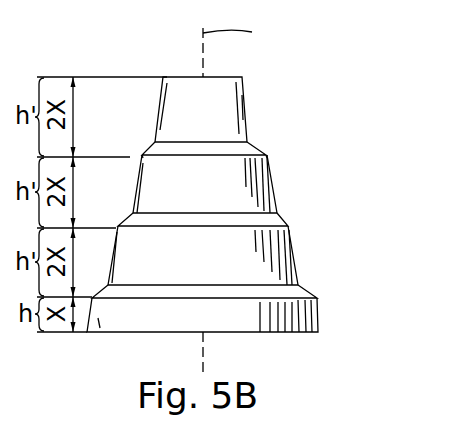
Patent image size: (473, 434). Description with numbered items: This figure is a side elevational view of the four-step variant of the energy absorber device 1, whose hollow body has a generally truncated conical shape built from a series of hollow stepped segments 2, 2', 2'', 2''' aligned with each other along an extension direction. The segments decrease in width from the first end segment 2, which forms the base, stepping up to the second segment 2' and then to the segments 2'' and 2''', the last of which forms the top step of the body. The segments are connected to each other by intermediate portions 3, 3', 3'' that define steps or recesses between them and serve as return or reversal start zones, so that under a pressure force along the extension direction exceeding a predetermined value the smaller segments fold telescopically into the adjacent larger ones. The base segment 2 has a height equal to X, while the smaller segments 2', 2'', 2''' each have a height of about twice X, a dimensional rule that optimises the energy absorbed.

The energy absorber device 1 is at (142, 62).
The first end segment 2 is at (243, 308).
The second segment 2' is at (240, 247).
The hollow stepped segment 2'' is at (246, 175).
The opposite end segment 2''' is at (246, 100).
The intermediate portion 3 is at (267, 277).
The intermediate portion 3' is at (270, 204).
The intermediate portion 3'' is at (275, 135).